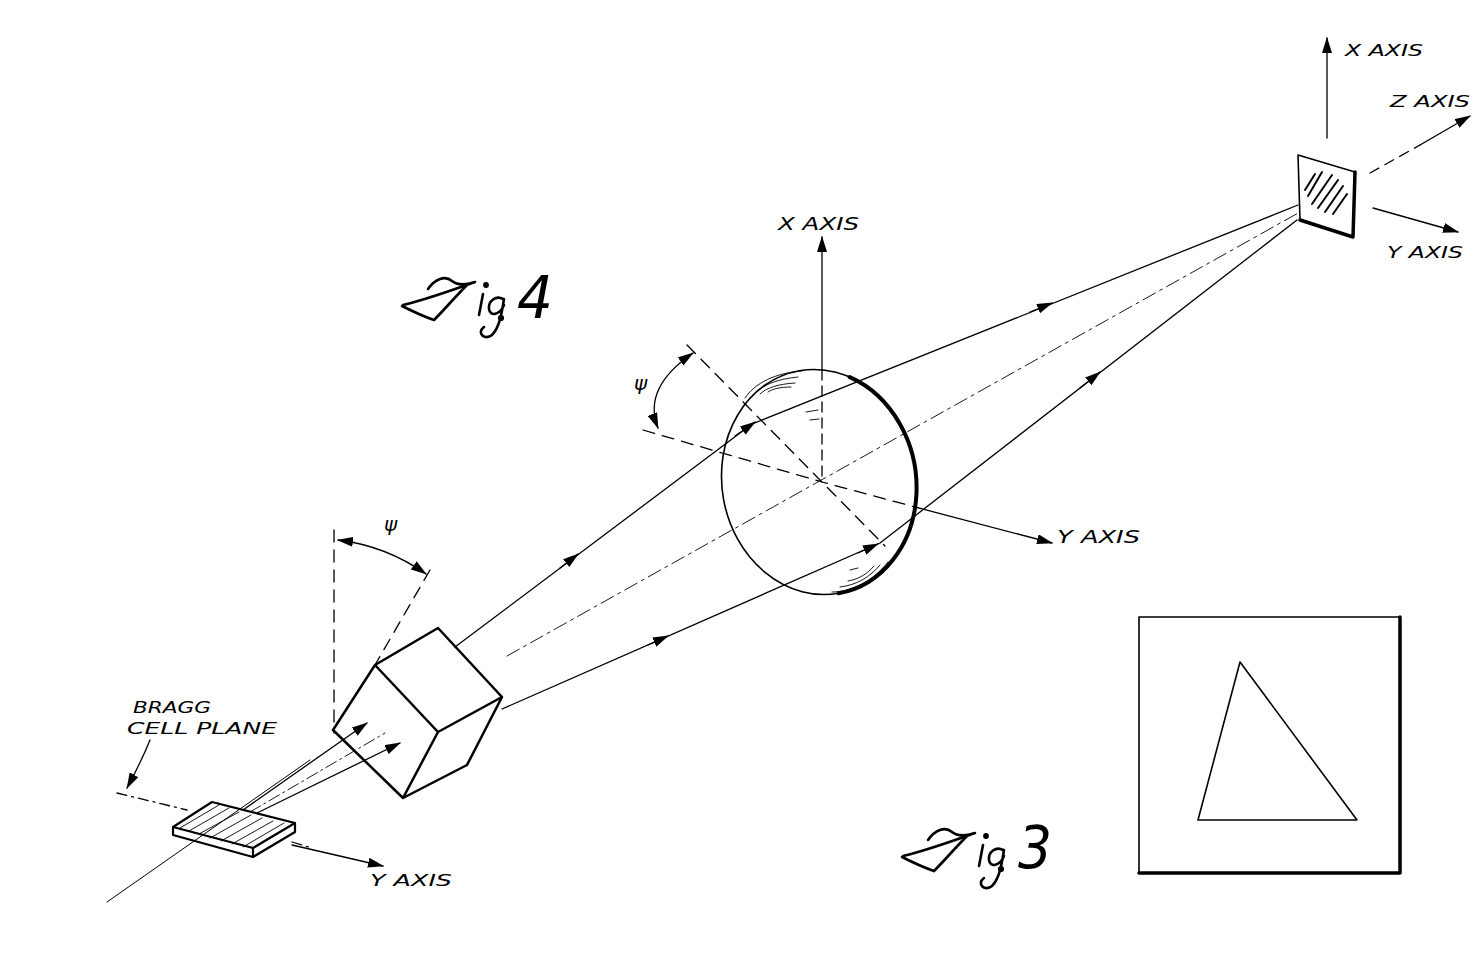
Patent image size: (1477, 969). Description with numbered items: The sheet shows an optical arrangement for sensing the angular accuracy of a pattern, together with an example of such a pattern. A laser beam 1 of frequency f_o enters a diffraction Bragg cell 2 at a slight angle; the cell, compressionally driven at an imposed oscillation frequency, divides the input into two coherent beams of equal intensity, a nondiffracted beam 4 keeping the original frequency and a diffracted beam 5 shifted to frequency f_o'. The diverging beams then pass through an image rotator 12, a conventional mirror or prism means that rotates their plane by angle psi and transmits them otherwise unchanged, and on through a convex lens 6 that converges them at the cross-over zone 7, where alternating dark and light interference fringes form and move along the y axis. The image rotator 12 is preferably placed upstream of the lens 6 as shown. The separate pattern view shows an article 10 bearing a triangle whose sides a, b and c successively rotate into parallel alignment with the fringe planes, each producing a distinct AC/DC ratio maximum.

In FIG. 4, the laser beam 1 is at (176, 860).
In FIG. 4, the diffraction Bragg cell 2 is at (219, 809).
In FIG. 4, the nondiffracted beam 4 is at (628, 516).
In FIG. 4, the diffracted beam 5 is at (689, 625).
In FIG. 4, the convex lens 6 is at (856, 590).
In FIG. 4, the cross-over zone 7 is at (1322, 240).
In FIG. 3, the article 10 is at (1363, 640).
In FIG. 4, the image rotator 12 is at (466, 741).